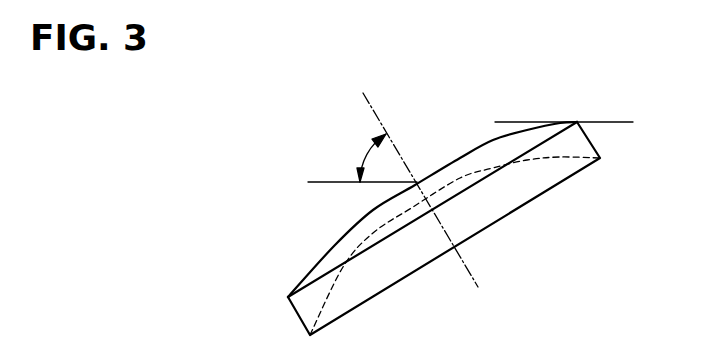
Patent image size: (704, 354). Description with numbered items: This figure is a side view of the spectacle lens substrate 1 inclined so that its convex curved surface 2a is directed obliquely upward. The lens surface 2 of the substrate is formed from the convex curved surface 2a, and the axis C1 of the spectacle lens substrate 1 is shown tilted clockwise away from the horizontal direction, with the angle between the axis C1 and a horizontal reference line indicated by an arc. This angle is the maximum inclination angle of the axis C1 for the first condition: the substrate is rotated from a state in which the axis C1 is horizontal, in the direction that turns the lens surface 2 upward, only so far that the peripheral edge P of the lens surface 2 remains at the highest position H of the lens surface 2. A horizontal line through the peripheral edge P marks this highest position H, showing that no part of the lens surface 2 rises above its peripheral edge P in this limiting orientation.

The spectacle lens substrate 1 is at (297, 313).
The lens surface 2 is at (393, 209).
The convex curved surface 2a is at (335, 245).
The axis C1 is at (377, 113).
The highest position H is at (612, 122).
The peripheral edge P is at (577, 122).